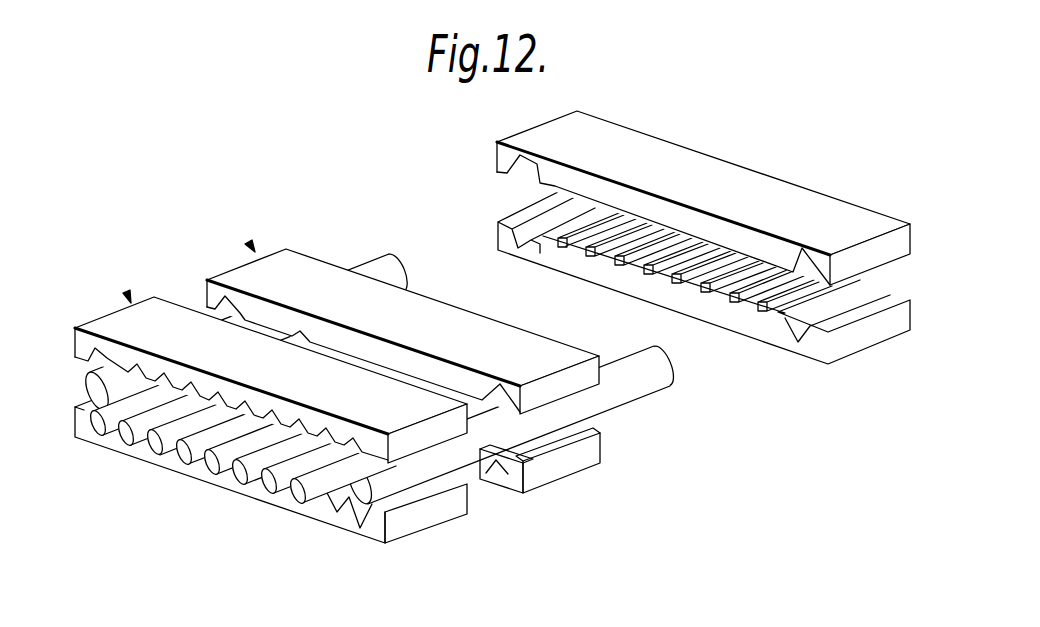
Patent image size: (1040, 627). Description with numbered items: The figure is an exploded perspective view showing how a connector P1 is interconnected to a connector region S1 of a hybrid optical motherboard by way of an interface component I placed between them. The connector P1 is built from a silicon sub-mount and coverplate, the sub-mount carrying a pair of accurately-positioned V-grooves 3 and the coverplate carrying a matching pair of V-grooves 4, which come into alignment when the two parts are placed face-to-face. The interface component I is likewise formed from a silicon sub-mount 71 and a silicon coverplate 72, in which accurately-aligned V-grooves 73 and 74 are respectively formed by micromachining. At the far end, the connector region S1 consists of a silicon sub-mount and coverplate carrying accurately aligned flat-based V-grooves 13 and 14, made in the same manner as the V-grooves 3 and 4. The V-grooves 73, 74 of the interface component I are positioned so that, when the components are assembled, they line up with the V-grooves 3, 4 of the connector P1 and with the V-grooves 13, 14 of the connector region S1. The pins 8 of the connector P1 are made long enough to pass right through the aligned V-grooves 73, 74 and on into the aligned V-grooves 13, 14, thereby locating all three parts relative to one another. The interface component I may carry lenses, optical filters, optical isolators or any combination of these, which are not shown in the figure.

The V-grooves 3 is at (352, 522).
The V-grooves 4 is at (93, 347).
The pins 8 is at (380, 262).
The V-grooves 13 is at (513, 232).
The V-grooves 14 is at (505, 163).
The sub-mount 71 is at (560, 470).
The coverplate 72 is at (422, 306).
The V-grooves 73 is at (503, 474).
The V-grooves 74 is at (224, 299).
The connector P1 is at (262, 406).
The interface component I is at (387, 372).
The connector region S1 is at (674, 241).